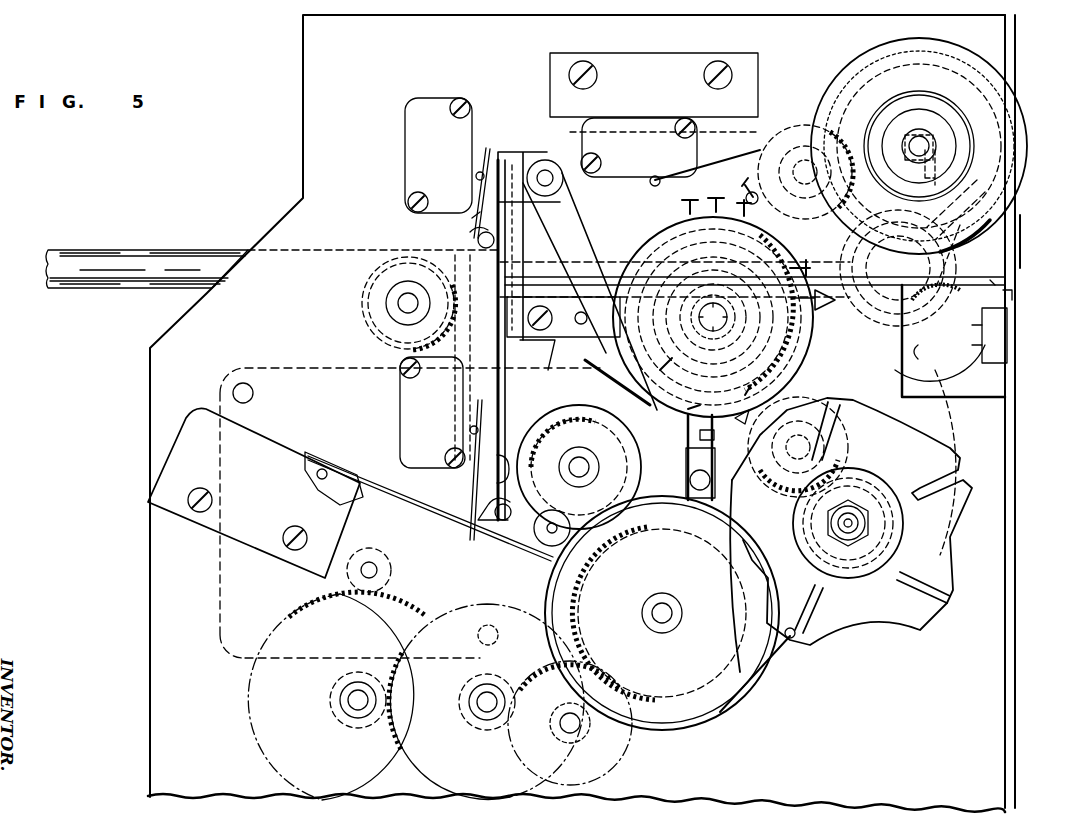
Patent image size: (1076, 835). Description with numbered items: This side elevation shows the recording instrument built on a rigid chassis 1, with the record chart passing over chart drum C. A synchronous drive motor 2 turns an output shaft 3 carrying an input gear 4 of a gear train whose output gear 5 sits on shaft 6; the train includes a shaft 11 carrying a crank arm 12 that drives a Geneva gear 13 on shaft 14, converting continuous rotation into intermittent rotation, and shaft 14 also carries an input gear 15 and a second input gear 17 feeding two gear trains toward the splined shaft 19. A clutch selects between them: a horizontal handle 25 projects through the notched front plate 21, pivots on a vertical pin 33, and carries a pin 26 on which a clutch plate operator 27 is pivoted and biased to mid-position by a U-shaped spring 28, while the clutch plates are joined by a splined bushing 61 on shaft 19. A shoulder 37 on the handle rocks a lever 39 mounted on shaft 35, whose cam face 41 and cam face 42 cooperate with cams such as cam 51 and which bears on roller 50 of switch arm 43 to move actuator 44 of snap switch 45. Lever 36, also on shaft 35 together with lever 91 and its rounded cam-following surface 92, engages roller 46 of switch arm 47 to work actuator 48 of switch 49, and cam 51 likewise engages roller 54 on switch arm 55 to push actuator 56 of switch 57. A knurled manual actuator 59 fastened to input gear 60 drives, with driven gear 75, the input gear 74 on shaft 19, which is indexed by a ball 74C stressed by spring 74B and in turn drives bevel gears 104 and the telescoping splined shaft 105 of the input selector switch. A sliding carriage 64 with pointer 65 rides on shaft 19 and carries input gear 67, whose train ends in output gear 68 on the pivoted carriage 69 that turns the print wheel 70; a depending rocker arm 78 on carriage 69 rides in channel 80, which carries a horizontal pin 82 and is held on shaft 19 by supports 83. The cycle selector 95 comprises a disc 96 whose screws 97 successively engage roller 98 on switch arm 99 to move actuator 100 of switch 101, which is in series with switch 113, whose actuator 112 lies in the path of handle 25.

The chassis 1 is at (325, 77).
The drive motor 2 is at (289, 368).
The output shaft 3 is at (372, 566).
The input gear 4 is at (386, 574).
The output gear 5 is at (655, 530).
The shaft 6 is at (590, 462).
The shaft 11 is at (650, 608).
The crank arm 12 is at (768, 665).
The Geneva gear 13 is at (880, 623).
The shaft 14 is at (860, 523).
The input gear 15 is at (868, 466).
The second input gear 17 is at (889, 438).
The splined shaft 19 is at (720, 312).
The front plate 21 is at (1012, 378).
The clutch handle 25 is at (1003, 281).
The pin 26 is at (576, 231).
The clutch plate operator 27 is at (704, 317).
The U-shaped spring 28 is at (575, 210).
The vertical pivot pin 33 is at (535, 243).
The shaft 35 is at (544, 168).
The lever 36 is at (580, 380).
The shoulder 37 is at (574, 248).
The lever 39 is at (509, 134).
The cam face 41 is at (572, 352).
The cam face 42 is at (510, 470).
The switch arm 43 is at (470, 481).
The actuator 44 is at (472, 432).
The snap electric switch 45 is at (400, 410).
The cam follower roller 46 is at (478, 238).
The switch arm 47 is at (472, 222).
The actuator 48 is at (476, 180).
The snap electric switch 49 is at (405, 138).
The cam follower roller 50 is at (487, 500).
The cam 51 is at (645, 510).
The cam follower roller 54 is at (606, 481).
The switch arm 55 is at (470, 530).
The actuator 56 is at (318, 477).
The snap electric switch 57 is at (262, 452).
The manually operated actuator 59 is at (1026, 128).
The input gear 60 is at (821, 110).
The splined bushing 61 is at (690, 324).
The sliding carriage 64 is at (825, 338).
The pointer 65 is at (1022, 232).
The input gear 67 is at (740, 246).
The output gear 68 is at (915, 244).
The pivoted carriage 69 is at (1000, 196).
The print wheel 70 is at (936, 328).
The input gear 74 is at (702, 150).
The spring 74B is at (605, 178).
The ball 74C is at (672, 132).
The driven gear 75 is at (815, 102).
The rocker arm 78 is at (756, 418).
The channel 80 is at (720, 456).
The horizontal pin 82 is at (697, 490).
The supports 83 is at (706, 490).
The lever 91 is at (584, 208).
The cam-following surface 92 is at (613, 430).
The cycle selector 95 is at (812, 358).
The disc 96 is at (810, 372).
The screws 97 is at (905, 372).
The cam follower roller 98 is at (750, 190).
The switch arm 99 is at (730, 178).
The actuator 100 is at (677, 178).
The electric switch 101 is at (633, 122).
The bevel gears 104 is at (418, 256).
The telescoping splined shaft 105 is at (126, 252).
The actuator 112 is at (1012, 295).
The switch 113 is at (990, 328).
The chart drum C is at (945, 423).